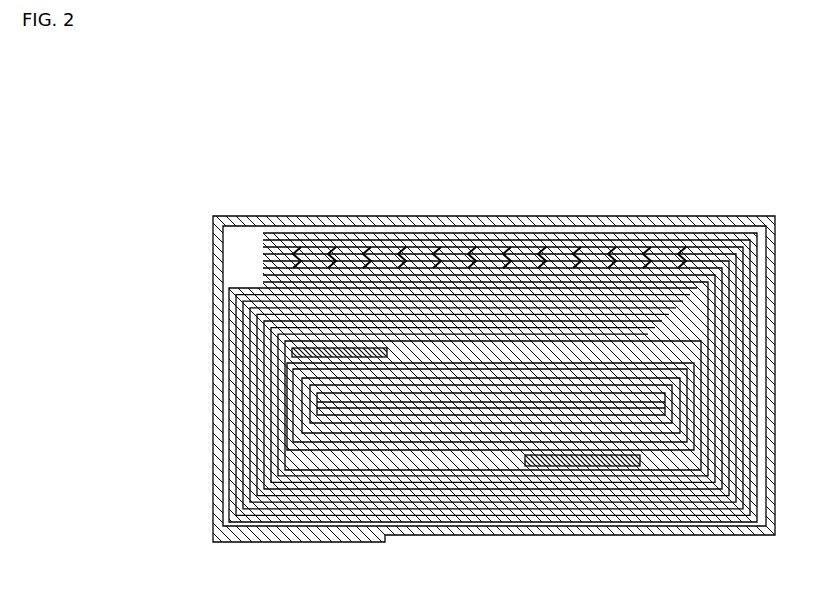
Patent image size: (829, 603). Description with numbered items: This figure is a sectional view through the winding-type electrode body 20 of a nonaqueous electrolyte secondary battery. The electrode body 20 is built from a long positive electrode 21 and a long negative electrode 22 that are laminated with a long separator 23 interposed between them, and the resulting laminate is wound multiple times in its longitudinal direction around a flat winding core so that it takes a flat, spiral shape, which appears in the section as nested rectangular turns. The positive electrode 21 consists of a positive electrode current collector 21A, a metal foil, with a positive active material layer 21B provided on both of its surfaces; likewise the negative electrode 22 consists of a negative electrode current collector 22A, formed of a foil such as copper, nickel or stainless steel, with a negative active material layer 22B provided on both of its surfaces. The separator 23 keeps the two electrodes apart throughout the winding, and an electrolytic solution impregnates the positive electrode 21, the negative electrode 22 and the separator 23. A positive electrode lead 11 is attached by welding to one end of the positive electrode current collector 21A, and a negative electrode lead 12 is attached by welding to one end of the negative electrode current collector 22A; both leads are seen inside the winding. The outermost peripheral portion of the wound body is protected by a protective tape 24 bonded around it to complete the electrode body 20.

The electrode body 20 is at (688, 110).
The positive electrode 21 is at (363, 158).
The positive electrode current collector 21A is at (298, 250).
The positive active material layer 21B is at (360, 278).
The negative electrode 22 is at (513, 158).
The negative electrode current collector 22A is at (416, 248).
The negative active material layer 22B is at (508, 260).
The separator 23 is at (642, 243).
The protective tape 24 is at (754, 216).
The positive electrode lead 11 is at (347, 357).
The negative electrode lead 12 is at (590, 466).